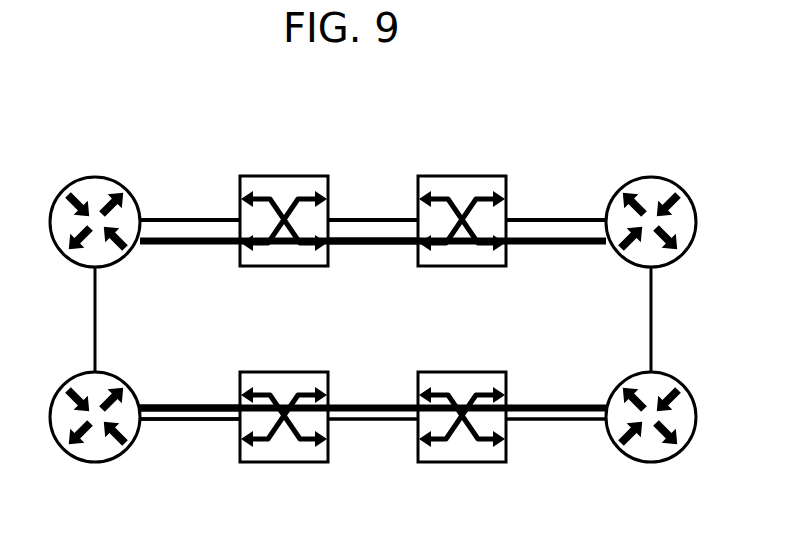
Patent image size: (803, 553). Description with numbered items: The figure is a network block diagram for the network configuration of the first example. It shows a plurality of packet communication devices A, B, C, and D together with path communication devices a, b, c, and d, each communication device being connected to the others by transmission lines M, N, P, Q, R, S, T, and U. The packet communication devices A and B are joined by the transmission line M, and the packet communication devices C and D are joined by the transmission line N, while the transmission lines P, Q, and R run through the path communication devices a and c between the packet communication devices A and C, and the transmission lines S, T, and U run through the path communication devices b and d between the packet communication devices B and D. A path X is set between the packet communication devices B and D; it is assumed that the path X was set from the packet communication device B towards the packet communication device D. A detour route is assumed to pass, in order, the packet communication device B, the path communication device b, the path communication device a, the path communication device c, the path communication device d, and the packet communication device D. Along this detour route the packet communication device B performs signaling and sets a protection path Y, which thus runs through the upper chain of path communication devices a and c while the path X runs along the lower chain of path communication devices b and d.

The packet communication device A is at (95, 176).
The packet communication device B is at (97, 464).
The packet communication device C is at (651, 176).
The packet communication device D is at (653, 464).
The path communication device a is at (283, 176).
The path communication device b is at (283, 463).
The path communication device c is at (462, 176).
The path communication device d is at (463, 463).
The transmission line P is at (192, 218).
The transmission line Q is at (378, 218).
The transmission line R is at (551, 218).
The transmission line S is at (196, 424).
The transmission line T is at (380, 424).
The transmission line U is at (552, 424).
The transmission line M is at (93, 320).
The transmission line N is at (654, 320).
The path X is at (197, 404).
The protection path Y is at (378, 246).